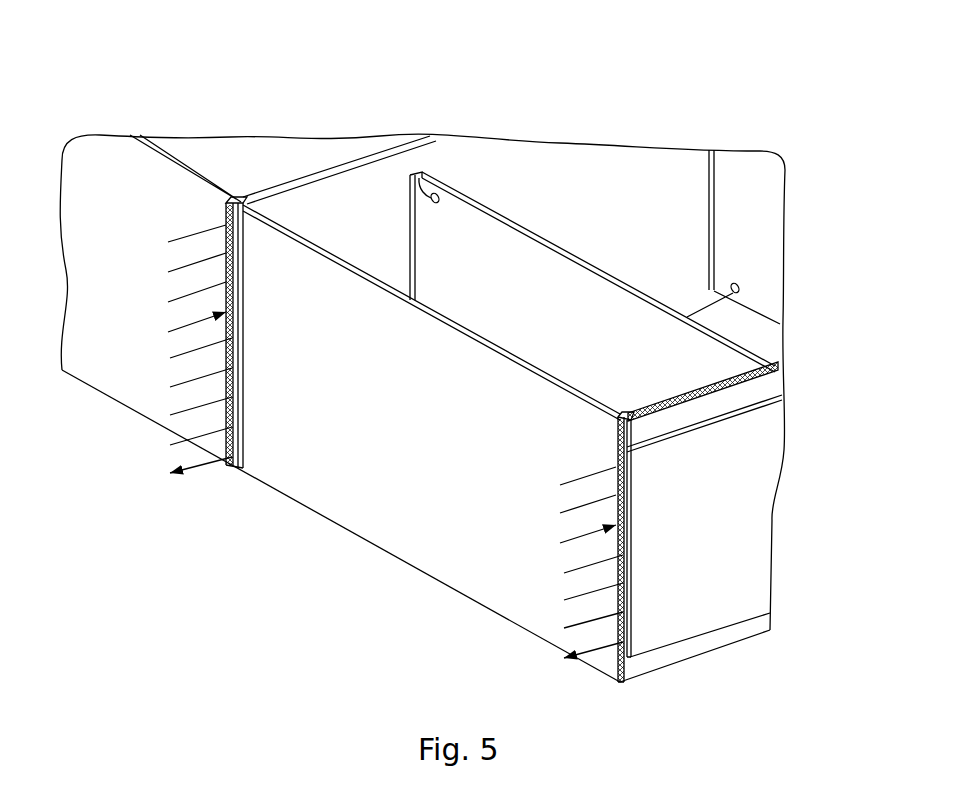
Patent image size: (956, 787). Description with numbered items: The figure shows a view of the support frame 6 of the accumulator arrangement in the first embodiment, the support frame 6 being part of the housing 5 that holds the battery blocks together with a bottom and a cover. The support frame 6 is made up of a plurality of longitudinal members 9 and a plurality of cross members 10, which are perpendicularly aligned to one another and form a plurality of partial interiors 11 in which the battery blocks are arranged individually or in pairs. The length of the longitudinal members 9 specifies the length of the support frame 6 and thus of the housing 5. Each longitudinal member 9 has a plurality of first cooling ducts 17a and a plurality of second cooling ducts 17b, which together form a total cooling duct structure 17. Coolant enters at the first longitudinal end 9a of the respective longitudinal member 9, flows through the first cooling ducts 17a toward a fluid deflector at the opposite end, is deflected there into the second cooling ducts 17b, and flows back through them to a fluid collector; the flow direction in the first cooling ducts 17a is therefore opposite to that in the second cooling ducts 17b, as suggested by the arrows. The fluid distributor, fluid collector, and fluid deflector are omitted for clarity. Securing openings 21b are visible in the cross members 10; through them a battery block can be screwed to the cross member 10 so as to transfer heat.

The housing 5 is at (486, 372).
The support frame 6 is at (828, 175).
The longitudinal member 9 is at (619, 210).
The first longitudinal end 9a is at (230, 468).
The cross member 10 is at (122, 278).
The partial interior 11 is at (272, 162).
The total cooling duct structure 17 is at (453, 439).
The first cooling duct 17a is at (242, 305).
The second cooling duct 17b is at (242, 440).
The securing opening 21b is at (420, 174).